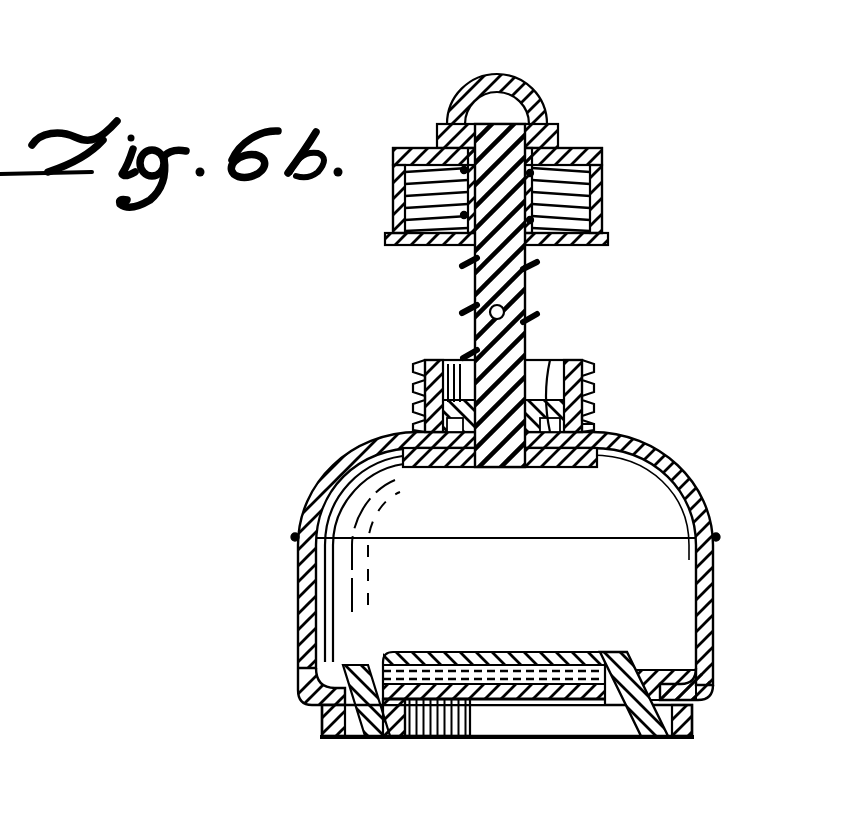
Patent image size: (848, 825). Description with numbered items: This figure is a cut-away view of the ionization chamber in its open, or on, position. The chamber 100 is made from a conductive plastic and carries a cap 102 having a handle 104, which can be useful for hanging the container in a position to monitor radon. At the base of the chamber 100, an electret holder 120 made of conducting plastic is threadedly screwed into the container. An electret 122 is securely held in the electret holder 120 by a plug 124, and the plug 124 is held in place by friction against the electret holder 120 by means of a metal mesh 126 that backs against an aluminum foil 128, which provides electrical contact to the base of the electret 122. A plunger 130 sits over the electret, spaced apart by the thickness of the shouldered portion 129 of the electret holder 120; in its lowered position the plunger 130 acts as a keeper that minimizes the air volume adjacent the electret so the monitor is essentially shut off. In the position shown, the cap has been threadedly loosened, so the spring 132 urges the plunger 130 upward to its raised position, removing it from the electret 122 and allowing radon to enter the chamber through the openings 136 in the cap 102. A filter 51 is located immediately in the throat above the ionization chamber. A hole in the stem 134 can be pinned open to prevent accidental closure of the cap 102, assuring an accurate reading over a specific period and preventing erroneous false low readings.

The filter 51 is at (592, 428).
The chamber 100 is at (290, 573).
The cap 102 is at (603, 182).
The handle 104 is at (542, 100).
The electret holder 120 is at (690, 720).
The electret 122 is at (533, 706).
The plug 124 is at (410, 738).
The metal mesh 126 is at (618, 735).
The aluminum foil 128 is at (488, 707).
The shouldered portion 129 is at (606, 655).
The plunger 130 is at (476, 280).
The spring 132 is at (537, 263).
The stem 134 is at (510, 308).
The openings 136 is at (412, 393).